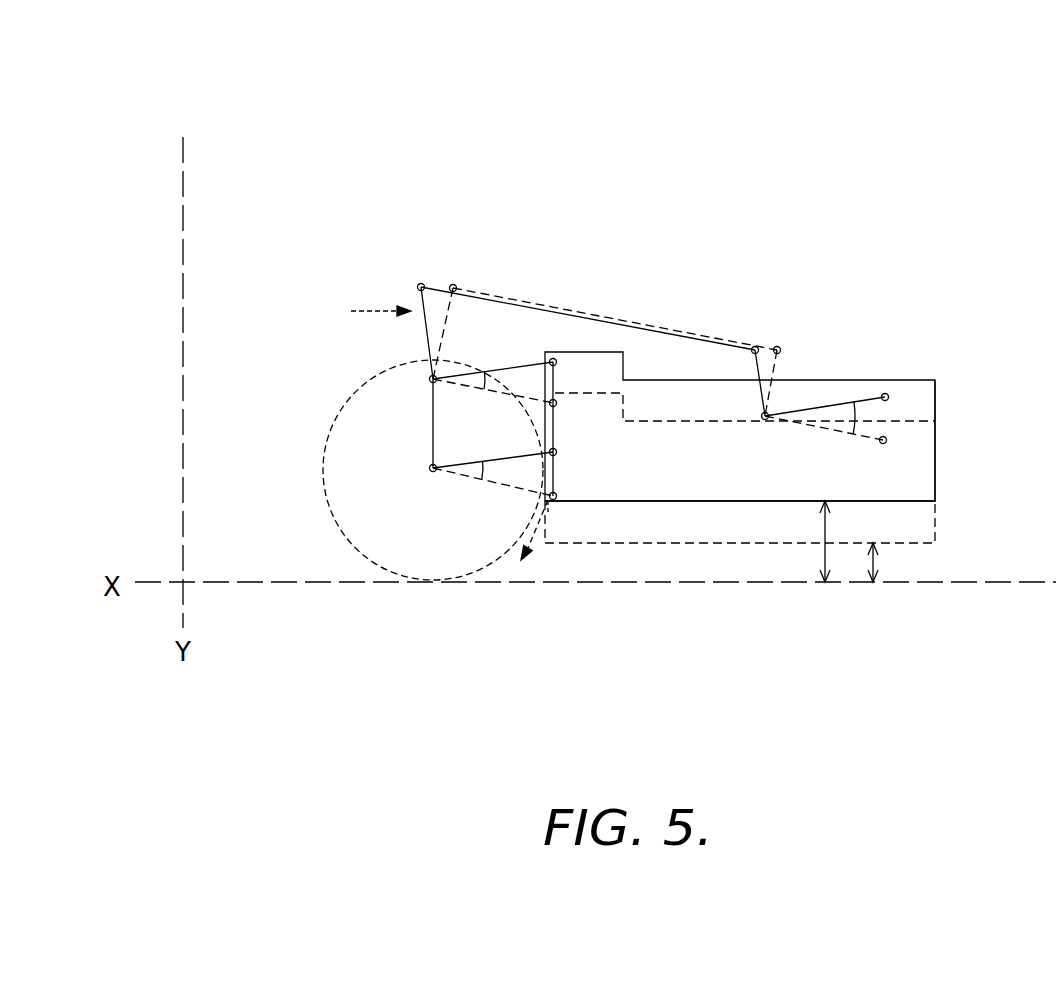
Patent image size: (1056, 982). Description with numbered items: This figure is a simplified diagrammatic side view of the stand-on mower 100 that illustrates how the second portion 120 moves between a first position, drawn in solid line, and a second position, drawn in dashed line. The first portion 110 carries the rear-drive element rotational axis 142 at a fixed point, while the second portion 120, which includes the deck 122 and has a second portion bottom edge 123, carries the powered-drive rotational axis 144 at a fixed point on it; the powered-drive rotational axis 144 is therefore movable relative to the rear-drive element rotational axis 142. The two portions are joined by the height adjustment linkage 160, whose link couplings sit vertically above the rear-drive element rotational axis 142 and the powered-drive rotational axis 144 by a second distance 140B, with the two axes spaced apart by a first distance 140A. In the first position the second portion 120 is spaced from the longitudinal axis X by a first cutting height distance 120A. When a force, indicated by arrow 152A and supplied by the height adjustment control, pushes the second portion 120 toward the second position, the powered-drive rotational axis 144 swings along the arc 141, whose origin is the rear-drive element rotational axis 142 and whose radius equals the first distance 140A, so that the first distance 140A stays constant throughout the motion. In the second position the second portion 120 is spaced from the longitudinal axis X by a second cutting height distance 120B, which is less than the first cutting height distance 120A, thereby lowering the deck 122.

The stand-on mower 100 is at (645, 78).
The first portion 110 is at (303, 376).
The second portion 120 is at (952, 418).
The first cutting height distance 120A is at (825, 528).
The second cutting height distance 120B is at (873, 560).
The deck 122 is at (912, 455).
The second portion bottom edge 123 is at (913, 502).
The first distance 140A is at (487, 372).
The second distance 140B is at (433, 437).
The arc 141 is at (550, 512).
The rear-drive element rotational axis 142 is at (433, 468).
The powered-drive rotational axis 144 is at (553, 452).
The force arrow 152A is at (372, 308).
The height adjustment linkage 160 is at (616, 276).